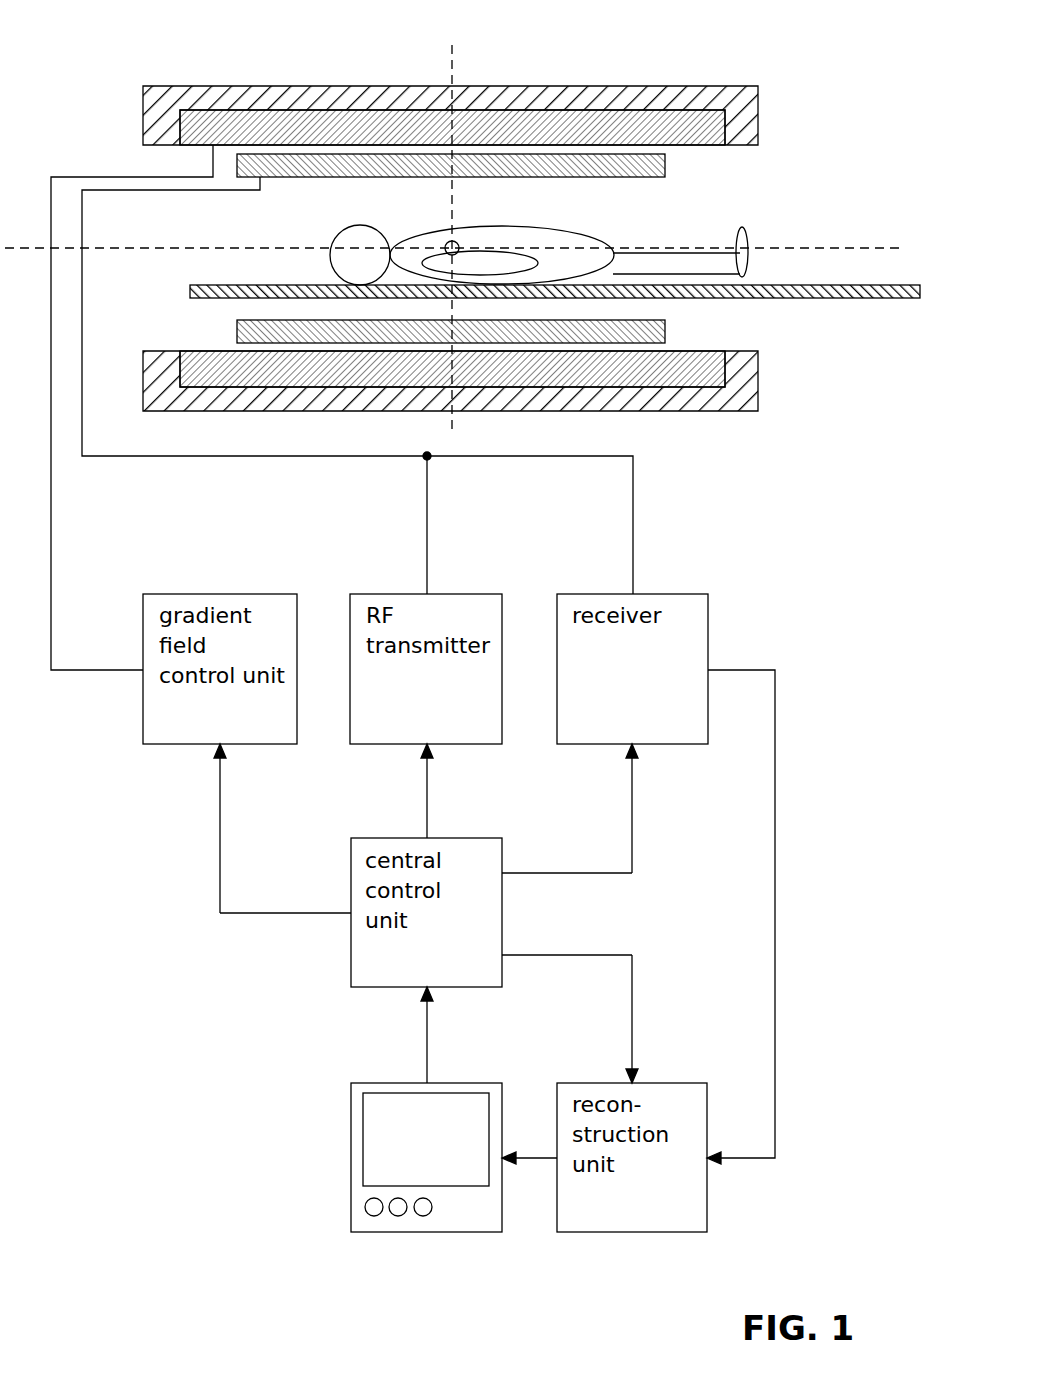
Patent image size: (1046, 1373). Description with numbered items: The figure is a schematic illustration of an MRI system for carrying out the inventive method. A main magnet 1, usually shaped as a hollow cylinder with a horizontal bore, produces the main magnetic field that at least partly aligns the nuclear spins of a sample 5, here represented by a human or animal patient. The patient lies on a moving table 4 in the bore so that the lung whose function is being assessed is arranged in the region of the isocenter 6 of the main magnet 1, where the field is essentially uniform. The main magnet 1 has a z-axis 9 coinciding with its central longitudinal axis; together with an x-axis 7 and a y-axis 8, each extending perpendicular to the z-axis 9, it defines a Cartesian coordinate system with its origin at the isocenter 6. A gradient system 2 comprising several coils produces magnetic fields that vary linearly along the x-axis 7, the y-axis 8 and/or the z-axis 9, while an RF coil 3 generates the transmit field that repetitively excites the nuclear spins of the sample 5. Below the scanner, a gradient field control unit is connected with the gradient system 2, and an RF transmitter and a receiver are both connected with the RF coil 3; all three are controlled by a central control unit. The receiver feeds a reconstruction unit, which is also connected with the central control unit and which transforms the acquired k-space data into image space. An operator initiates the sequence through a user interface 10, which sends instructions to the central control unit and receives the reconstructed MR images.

The main magnet 1 is at (698, 100).
The gradient system 2 is at (565, 128).
The RF coil 3 is at (517, 167).
The moving table 4 is at (717, 287).
The sample 5 is at (605, 254).
The isocenter 6 is at (444, 246).
The x-axis 7 is at (452, 76).
The y-axis 8 is at (457, 240).
The z-axis 9 is at (805, 246).
The user interface 10 is at (383, 1143).